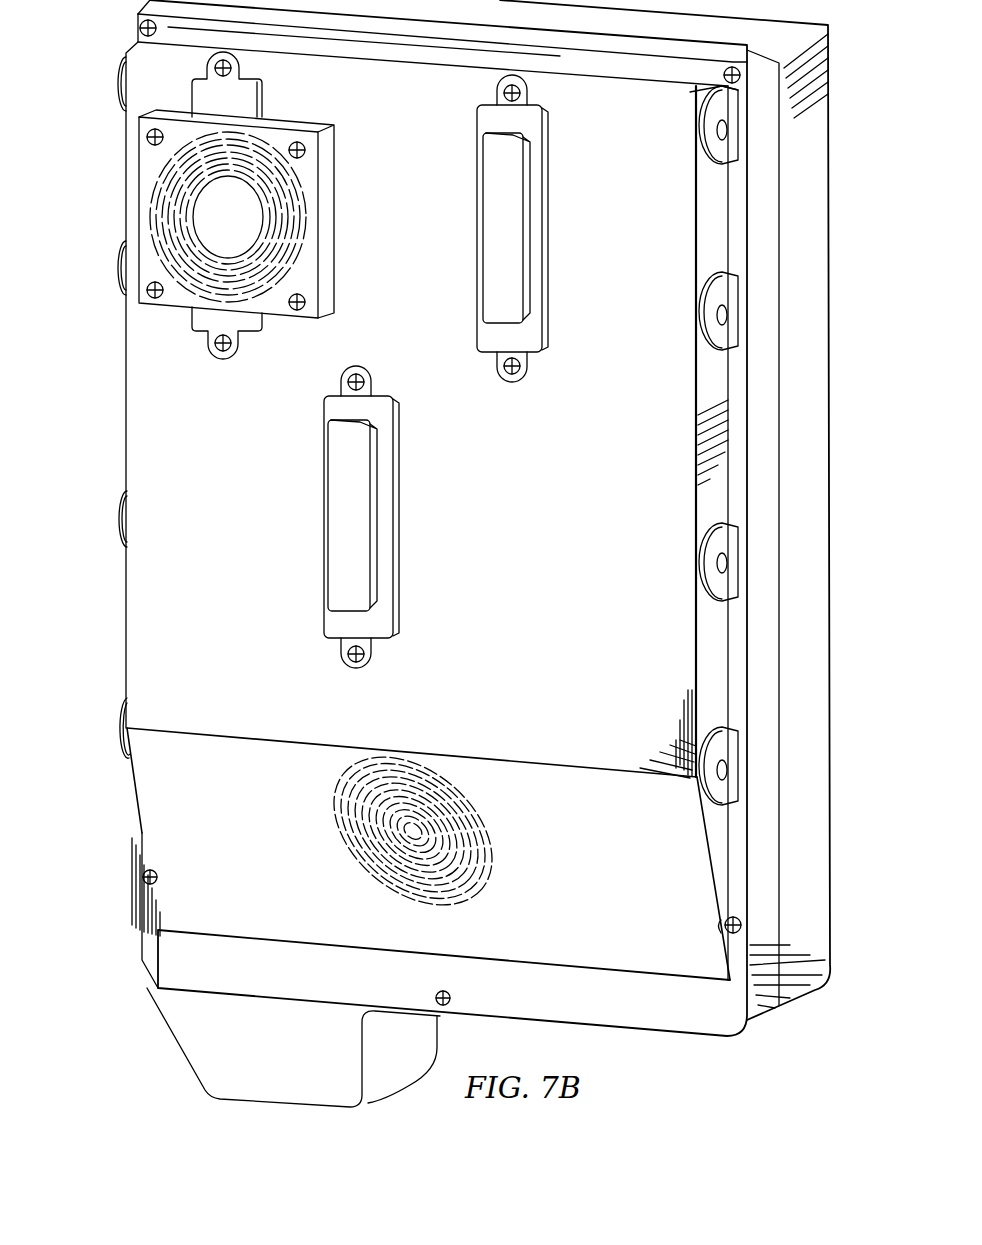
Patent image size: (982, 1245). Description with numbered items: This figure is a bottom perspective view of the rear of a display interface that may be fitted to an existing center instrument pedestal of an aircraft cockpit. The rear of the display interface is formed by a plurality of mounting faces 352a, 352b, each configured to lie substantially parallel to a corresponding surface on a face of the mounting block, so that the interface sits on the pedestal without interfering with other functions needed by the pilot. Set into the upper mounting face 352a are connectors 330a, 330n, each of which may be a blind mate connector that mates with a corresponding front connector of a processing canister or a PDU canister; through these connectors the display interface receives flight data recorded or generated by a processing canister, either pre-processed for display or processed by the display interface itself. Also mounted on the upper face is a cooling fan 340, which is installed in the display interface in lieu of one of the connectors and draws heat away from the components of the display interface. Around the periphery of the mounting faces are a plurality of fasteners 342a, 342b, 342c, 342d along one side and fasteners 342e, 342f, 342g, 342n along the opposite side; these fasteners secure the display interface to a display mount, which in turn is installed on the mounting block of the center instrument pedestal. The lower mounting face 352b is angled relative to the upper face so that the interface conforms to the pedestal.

The cooling fan 340 is at (148, 158).
The connector 330a is at (502, 228).
The connector 330n is at (345, 512).
The fastener 342a is at (716, 168).
The fastener 342b is at (720, 350).
The fastener 342c is at (720, 601).
The fastener 342d is at (720, 805).
The fastener 342e is at (118, 88).
The fastener 342f is at (118, 268).
The fastener 342g is at (120, 523).
The fastener 342n is at (120, 743).
The mounting face 352a is at (148, 605).
The mounting face 352b is at (160, 778).